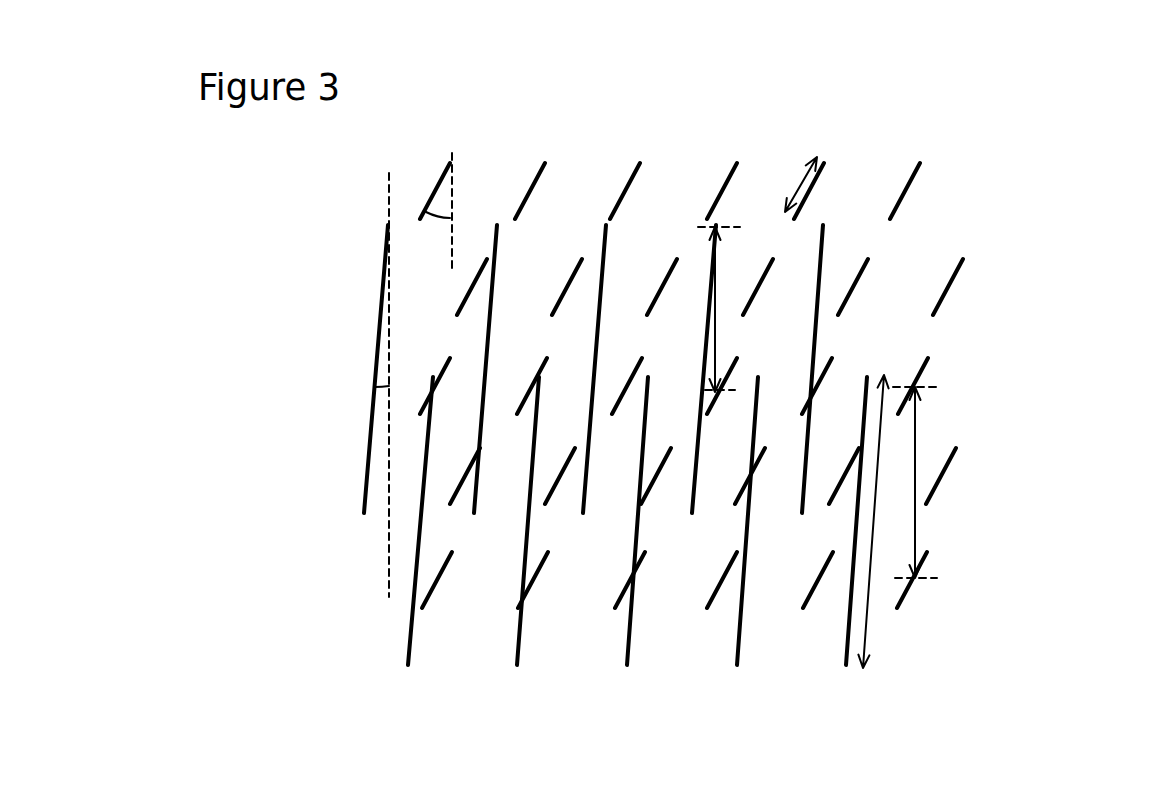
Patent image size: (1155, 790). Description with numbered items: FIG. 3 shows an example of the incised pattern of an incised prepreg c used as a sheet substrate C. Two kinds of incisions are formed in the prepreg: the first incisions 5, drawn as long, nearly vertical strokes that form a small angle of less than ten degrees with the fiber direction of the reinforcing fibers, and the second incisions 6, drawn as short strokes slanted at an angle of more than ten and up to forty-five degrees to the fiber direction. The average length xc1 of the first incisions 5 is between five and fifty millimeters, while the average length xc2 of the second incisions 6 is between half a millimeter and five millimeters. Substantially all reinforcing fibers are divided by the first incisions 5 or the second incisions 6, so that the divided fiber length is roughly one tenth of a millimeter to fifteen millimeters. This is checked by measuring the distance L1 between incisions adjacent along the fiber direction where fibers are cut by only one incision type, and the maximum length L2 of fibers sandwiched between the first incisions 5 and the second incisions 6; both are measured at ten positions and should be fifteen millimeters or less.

The incision 1 5 is at (380, 322).
The incision 2 6 is at (450, 552).
The distance between adjacent incisions along the fiber direction L1 is at (915, 442).
The maximum length of reinforcing fibers sandwiched between incisions 1 and incision L2 is at (718, 347).
The average length of incisions 1 xc1 is at (867, 637).
The average length of incisions 2 xc2 is at (800, 177).